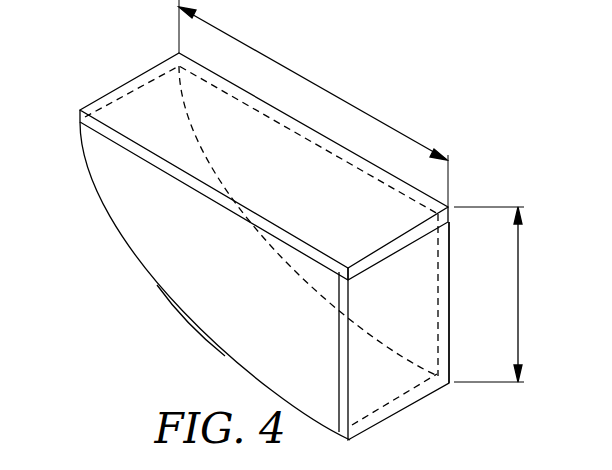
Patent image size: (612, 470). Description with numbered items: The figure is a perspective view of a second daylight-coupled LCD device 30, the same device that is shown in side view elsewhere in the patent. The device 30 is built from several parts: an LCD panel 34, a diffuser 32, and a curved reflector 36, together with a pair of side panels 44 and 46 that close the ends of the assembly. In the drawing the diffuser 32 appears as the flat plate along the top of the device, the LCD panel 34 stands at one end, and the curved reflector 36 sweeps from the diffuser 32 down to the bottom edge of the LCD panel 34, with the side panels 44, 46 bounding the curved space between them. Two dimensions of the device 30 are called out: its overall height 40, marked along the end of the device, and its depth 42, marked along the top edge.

The daylight-coupled LCD device 30 is at (298, 246).
The diffuser 32 is at (80, 112).
The LCD panel 34 is at (343, 358).
The curved reflector 36 is at (155, 285).
The height 40 is at (519, 275).
The depth 42 is at (337, 97).
The side panel 44 is at (197, 313).
The side panel 46 is at (428, 300).